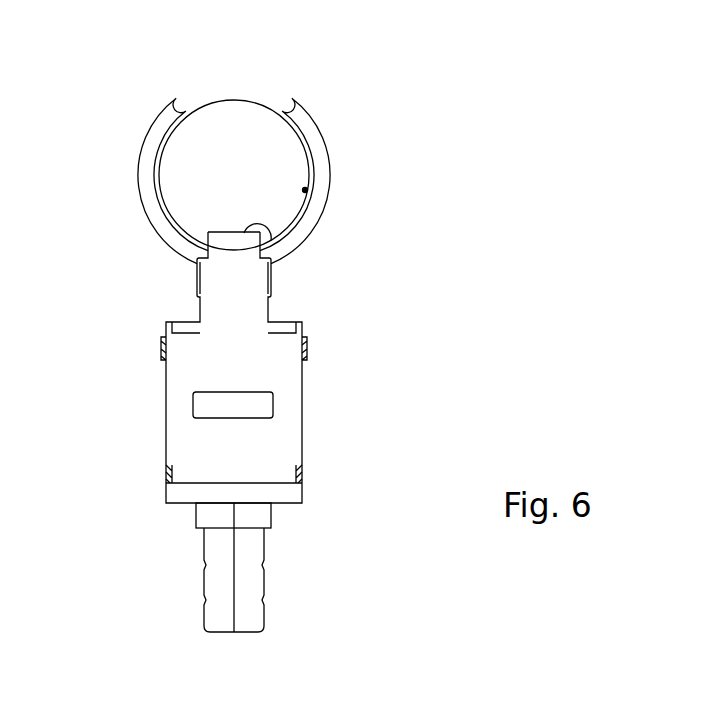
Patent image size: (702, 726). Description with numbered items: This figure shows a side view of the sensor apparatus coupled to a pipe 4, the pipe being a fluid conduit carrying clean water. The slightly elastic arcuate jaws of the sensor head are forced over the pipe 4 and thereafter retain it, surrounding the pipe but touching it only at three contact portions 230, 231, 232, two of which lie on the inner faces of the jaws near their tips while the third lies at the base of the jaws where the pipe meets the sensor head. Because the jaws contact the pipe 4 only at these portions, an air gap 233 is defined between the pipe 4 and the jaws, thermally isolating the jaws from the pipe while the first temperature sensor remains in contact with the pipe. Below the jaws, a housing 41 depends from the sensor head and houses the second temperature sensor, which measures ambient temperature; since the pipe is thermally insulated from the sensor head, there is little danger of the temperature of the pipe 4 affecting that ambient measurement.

The pipe 4 is at (248, 98).
The contact portion 230 is at (187, 115).
The contact portion 231 is at (281, 115).
The contact portion 232 is at (262, 232).
The air gap 233 is at (308, 195).
The housing 41 is at (166, 440).